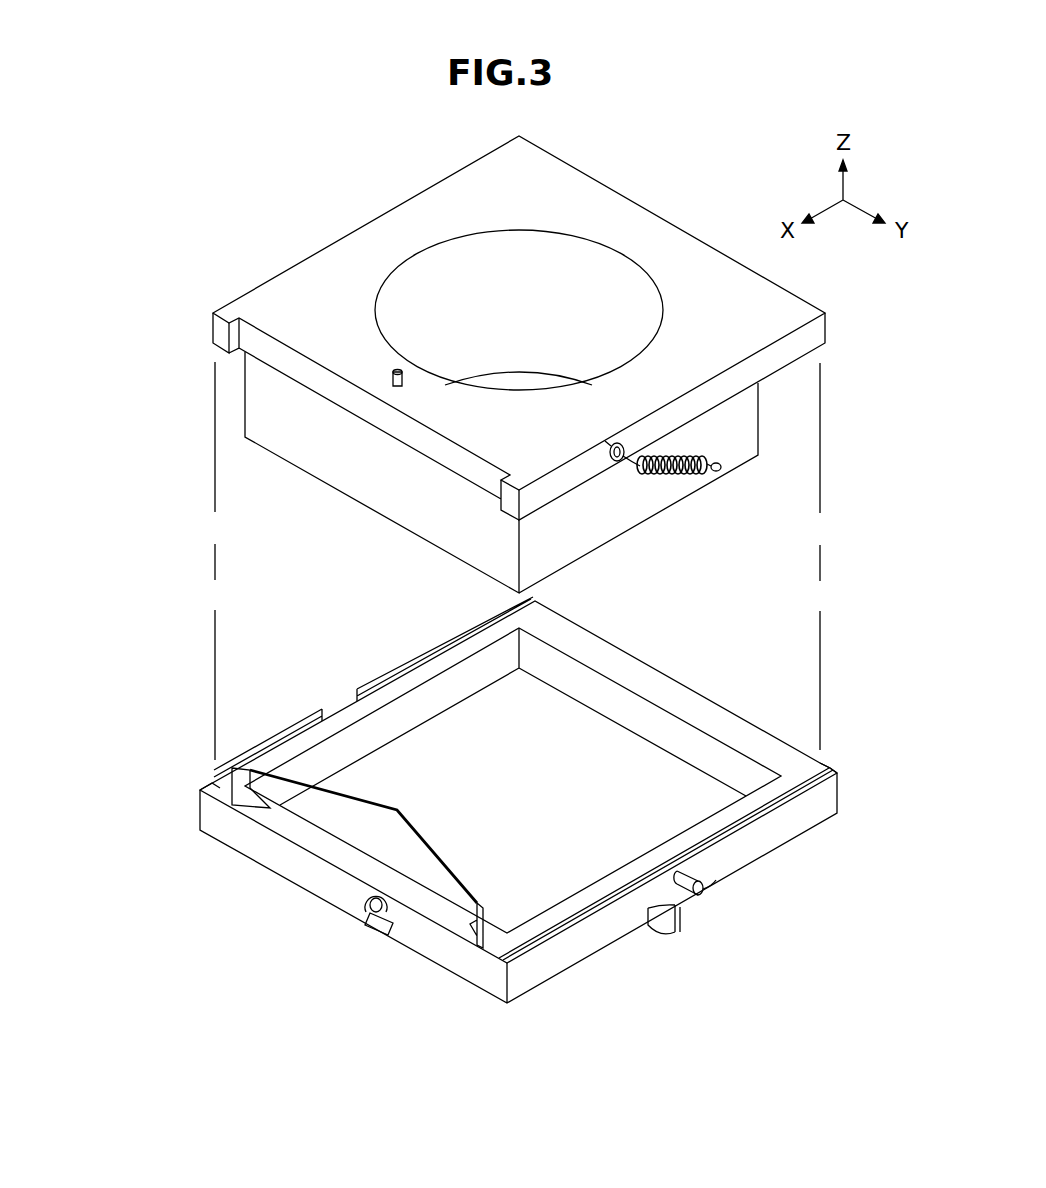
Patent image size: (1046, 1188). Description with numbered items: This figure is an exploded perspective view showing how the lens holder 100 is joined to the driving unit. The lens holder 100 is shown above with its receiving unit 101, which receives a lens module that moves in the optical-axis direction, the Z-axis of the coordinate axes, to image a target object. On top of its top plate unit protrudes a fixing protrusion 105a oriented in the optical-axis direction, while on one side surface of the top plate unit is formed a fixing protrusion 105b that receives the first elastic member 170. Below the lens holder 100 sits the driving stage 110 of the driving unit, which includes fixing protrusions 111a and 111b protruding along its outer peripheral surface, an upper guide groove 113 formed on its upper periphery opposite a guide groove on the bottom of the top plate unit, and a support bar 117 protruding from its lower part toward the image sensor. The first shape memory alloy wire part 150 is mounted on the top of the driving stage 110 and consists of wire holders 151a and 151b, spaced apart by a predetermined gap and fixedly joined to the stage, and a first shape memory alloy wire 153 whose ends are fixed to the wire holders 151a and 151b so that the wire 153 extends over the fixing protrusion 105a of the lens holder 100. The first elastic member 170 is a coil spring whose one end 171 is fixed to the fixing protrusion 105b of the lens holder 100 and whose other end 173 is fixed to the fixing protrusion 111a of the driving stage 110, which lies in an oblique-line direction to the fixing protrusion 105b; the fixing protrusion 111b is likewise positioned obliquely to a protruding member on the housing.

The lens holder 100 is at (797, 313).
The receiving unit 101 is at (636, 296).
The fixing protrusion 105a is at (393, 375).
The fixing protrusion 105b is at (622, 458).
The driving stage 110 is at (828, 807).
The fixing protrusion 111a is at (703, 893).
The fixing protrusion 111b is at (372, 930).
The upper guide groove 113 is at (205, 787).
The support bar 117 is at (682, 936).
The first shape memory alloy wire part 150 is at (268, 858).
The wire holder 151a is at (242, 797).
The wire holder 151b is at (388, 882).
The first shape memory alloy wire 153 is at (362, 800).
The first elastic member 170 is at (798, 476).
The one end 171 is at (648, 474).
The other end 173 is at (704, 461).